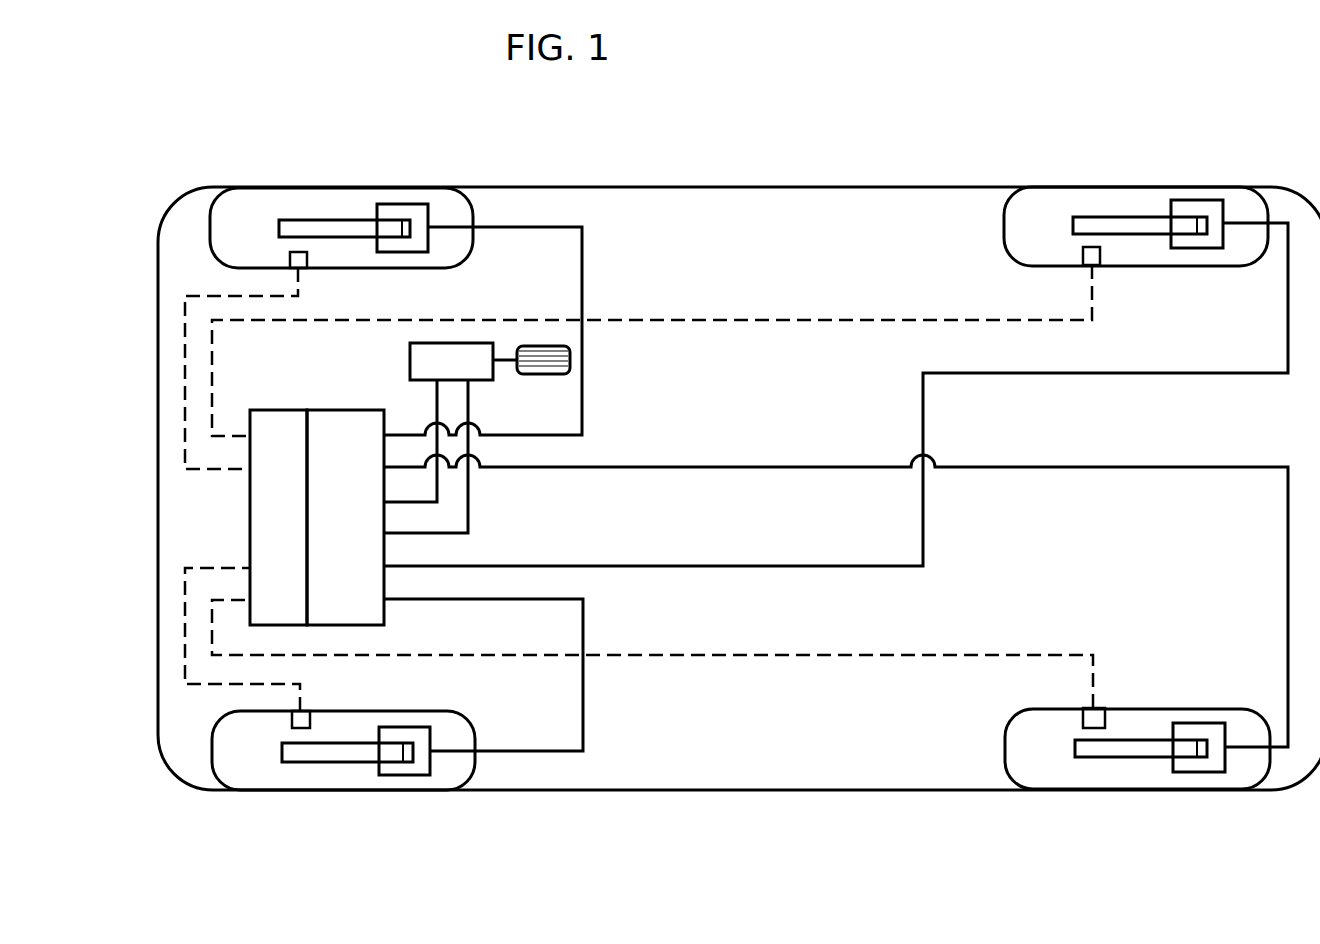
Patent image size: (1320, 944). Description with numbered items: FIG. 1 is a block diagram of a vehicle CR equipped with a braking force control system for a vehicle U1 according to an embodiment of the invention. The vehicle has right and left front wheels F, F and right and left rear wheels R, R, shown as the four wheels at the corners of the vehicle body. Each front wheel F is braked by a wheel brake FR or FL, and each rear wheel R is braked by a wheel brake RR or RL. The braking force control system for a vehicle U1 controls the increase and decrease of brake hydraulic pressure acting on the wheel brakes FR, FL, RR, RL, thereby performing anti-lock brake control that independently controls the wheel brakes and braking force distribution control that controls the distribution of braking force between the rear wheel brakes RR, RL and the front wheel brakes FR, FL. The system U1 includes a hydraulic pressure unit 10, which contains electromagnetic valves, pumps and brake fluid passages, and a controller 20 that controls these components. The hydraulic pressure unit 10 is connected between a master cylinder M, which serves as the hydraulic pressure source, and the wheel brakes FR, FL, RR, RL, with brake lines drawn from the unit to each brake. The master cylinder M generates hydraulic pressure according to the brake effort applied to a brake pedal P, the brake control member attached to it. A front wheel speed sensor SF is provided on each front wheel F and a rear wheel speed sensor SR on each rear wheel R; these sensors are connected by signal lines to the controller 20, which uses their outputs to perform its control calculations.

The vehicle (car) CR is at (769, 172).
The braking force control system for a vehicle U1 is at (238, 527).
The hydraulic pressure unit 10 is at (345, 414).
The controller 20 is at (278, 414).
The master cylinder M is at (410, 360).
The brake pedal P is at (548, 374).
The front wheel F is at (340, 201).
The rear wheel R is at (1135, 201).
The wheel brake FR is at (298, 223).
The wheel brake FL is at (302, 756).
The wheel brake RR is at (1092, 222).
The wheel brake RL is at (1097, 752).
The front wheel speed sensor SF is at (300, 258).
The rear wheel speed sensor SR is at (1094, 252).